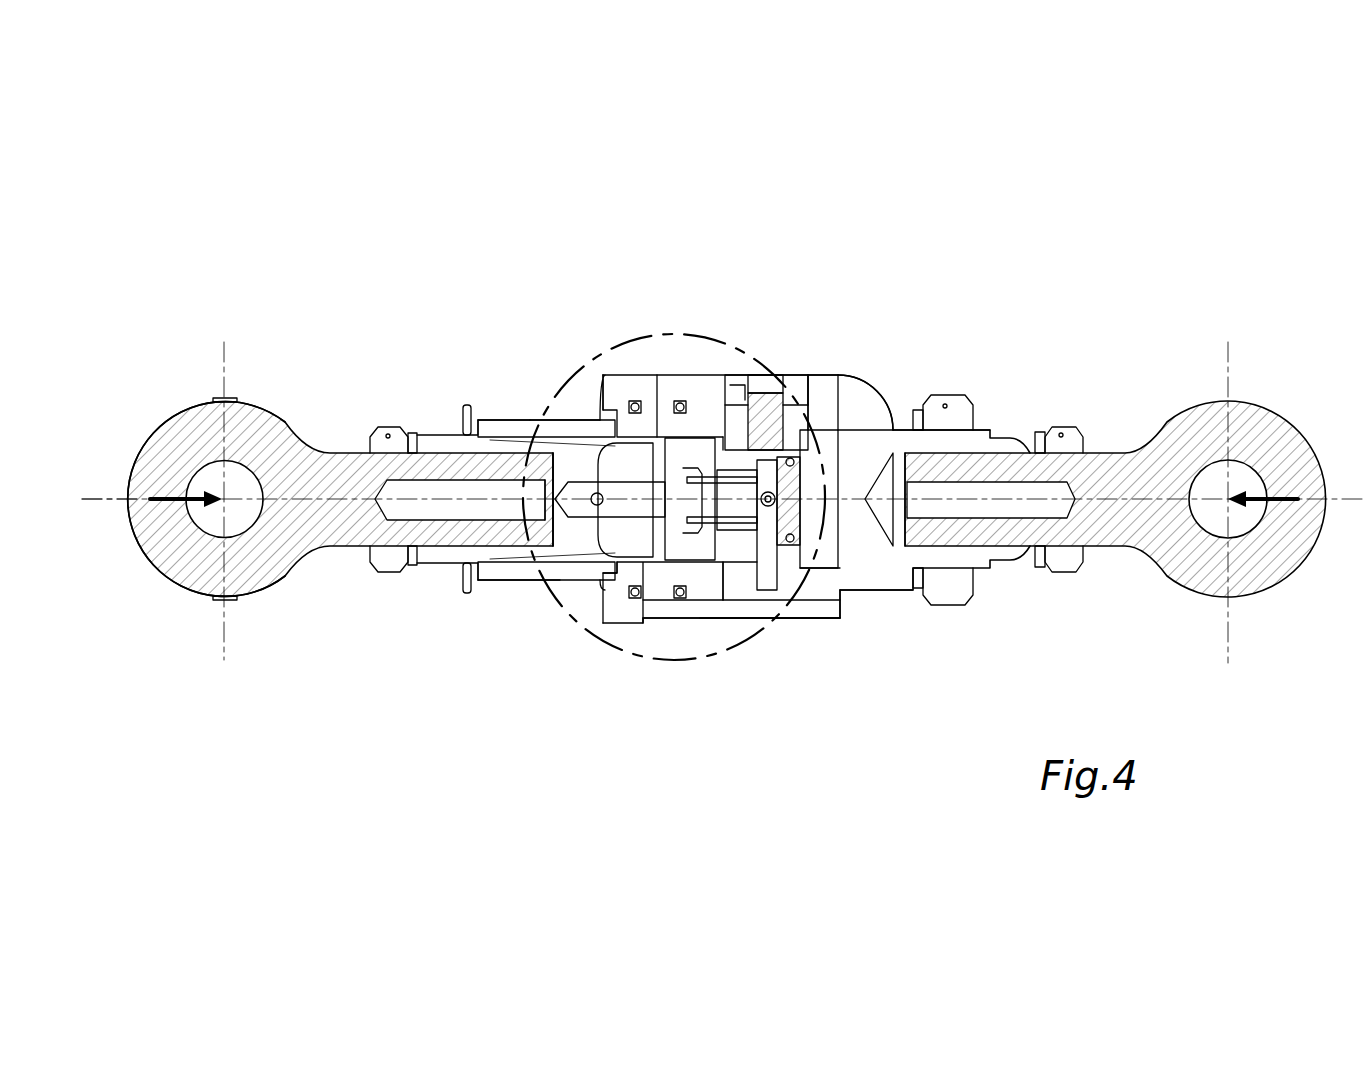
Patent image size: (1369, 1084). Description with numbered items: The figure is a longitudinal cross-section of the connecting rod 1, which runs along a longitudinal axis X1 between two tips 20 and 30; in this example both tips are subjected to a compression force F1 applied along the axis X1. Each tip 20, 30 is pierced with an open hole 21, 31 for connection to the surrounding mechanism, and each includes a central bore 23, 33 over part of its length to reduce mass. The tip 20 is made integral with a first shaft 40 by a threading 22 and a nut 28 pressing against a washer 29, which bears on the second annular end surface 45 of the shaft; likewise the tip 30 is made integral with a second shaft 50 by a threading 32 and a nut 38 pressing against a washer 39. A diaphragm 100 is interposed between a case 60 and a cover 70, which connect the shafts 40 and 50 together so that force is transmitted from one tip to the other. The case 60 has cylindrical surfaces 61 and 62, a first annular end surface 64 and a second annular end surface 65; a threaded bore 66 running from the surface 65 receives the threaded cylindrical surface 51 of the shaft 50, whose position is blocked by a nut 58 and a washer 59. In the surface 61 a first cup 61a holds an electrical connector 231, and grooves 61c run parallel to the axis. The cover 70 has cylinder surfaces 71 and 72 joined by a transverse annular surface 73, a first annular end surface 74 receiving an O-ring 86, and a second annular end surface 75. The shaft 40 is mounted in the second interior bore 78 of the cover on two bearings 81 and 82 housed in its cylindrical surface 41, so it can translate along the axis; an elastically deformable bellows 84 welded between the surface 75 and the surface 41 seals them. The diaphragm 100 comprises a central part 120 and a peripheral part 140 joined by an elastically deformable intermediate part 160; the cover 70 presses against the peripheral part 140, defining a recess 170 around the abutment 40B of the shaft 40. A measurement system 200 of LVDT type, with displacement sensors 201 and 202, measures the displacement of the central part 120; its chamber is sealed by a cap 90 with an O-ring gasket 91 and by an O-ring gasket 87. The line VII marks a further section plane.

The connecting rod 1 is at (386, 243).
The tip 20 is at (167, 442).
The open hole 21 is at (190, 522).
The threading 22 is at (438, 554).
The central bore 23 is at (464, 499).
The nut 28 is at (382, 440).
The washer 29 is at (412, 440).
The tip 30 is at (1247, 427).
The open hole 31 is at (1246, 523).
The threading 32 is at (1035, 558).
The central bore 33 is at (991, 500).
The nut 38 is at (1066, 430).
The washer 39 is at (1040, 432).
The first shaft 40 is at (504, 563).
The abutment 40B is at (672, 400).
The cylindrical surface 41 is at (548, 455).
The second annular end surface 45 is at (405, 553).
The second shaft 50 is at (822, 570).
The threaded cylindrical surface 51 is at (865, 575).
The nut 58 is at (948, 400).
The washer 59 is at (918, 416).
The case 60 is at (893, 416).
The cylindrical surface 61 is at (864, 400).
The first cup 61a is at (837, 370).
The grooves 61c is at (742, 622).
The cylindrical surface 62 is at (893, 594).
The first annular end surface 64 is at (700, 428).
The second annular end surface 65 is at (925, 581).
The threaded bore 66 is at (868, 436).
The cover 70 is at (627, 374).
The cylinder surface 71 is at (657, 395).
The cylinder surface 72 is at (497, 433).
The transverse annular surface 73 is at (597, 376).
The first annular end surface 74 is at (622, 578).
The second annular end surface 75 is at (464, 595).
The second interior bore 78 is at (502, 582).
The bearing 81 is at (565, 430).
The bearing 82 is at (522, 421).
The bellows 84 is at (477, 414).
The O-ring 86 is at (640, 400).
The O-ring gasket 87 is at (758, 468).
The cap 90 is at (790, 548).
The O-ring gasket 91 is at (808, 608).
The diaphragm 100 is at (650, 448).
The central part 120 is at (592, 585).
The peripheral part 140 is at (646, 612).
The intermediate part 160 is at (700, 562).
The recess 170 is at (632, 578).
The measurement system 200 is at (790, 400).
The displacement sensor 201 is at (768, 393).
The displacement sensor 202 is at (722, 600).
The electrical connector 231 is at (838, 398).
The section line VII- VII is at (758, 344).
The longitudinal axis X1 is at (96, 499).
The compression force F1 is at (724, 489).